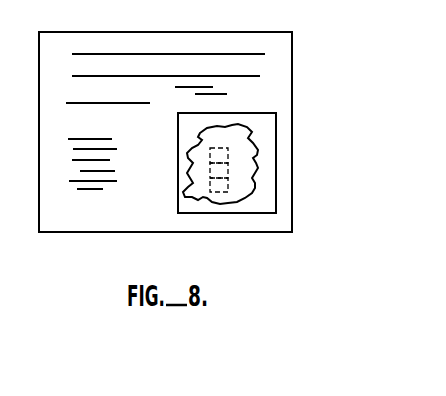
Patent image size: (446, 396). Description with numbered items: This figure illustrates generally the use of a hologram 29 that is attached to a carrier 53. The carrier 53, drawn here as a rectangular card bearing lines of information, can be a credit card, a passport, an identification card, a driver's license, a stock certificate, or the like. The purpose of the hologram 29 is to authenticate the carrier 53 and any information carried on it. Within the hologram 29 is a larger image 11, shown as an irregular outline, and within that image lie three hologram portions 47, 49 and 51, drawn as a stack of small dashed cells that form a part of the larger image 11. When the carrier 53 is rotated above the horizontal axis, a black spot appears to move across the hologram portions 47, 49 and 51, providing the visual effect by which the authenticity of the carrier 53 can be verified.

The carrier 53 is at (63, 45).
The hologram 29 is at (265, 205).
The larger image 11 is at (205, 198).
The hologram portion 47 is at (229, 152).
The hologram portion 49 is at (229, 170).
The hologram portion 51 is at (229, 185).